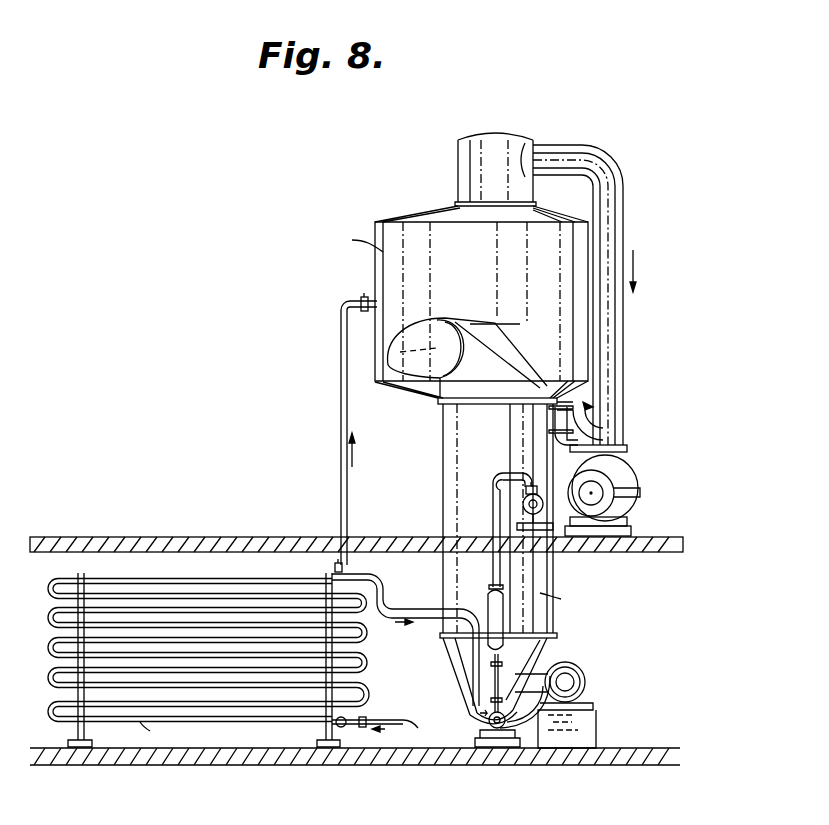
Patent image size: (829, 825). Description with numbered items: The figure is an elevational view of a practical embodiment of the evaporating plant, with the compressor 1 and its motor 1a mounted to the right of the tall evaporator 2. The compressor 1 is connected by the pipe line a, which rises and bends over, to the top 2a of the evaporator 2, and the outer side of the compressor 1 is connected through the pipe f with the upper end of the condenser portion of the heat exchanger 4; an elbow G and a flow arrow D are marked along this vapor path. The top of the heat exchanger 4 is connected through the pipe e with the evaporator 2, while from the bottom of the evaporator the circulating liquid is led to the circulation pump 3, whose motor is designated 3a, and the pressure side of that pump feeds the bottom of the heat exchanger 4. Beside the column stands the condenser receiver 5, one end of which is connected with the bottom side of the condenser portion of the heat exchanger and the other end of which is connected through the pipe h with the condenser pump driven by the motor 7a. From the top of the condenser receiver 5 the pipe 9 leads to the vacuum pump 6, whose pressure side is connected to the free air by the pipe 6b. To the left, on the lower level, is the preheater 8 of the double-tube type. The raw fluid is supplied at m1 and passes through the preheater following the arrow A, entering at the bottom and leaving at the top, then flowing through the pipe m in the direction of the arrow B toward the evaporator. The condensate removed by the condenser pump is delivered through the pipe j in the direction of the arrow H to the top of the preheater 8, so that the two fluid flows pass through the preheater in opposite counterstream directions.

The compressor 1 is at (628, 480).
The compressor motor 1a is at (620, 503).
The evaporator 2 is at (388, 272).
The top of the evaporator 2a is at (460, 160).
The circulation pump 3 is at (520, 715).
The circulation pump motor 3a is at (582, 676).
The heat exchanger 4 is at (455, 463).
The condenser receiver 5 is at (503, 602).
The vacuum pump 6 is at (527, 490).
The vacuum pump discharge pipe 6b is at (527, 508).
The condenser pump motor 7a is at (486, 725).
The preheater 8 is at (163, 577).
The vacuum pipe 9 is at (492, 519).
The pipe line a is at (620, 228).
The pipe e is at (420, 362).
The pipe f is at (596, 432).
The elbow G is at (612, 416).
The pipe h is at (496, 685).
The pipe j is at (394, 606).
The pipe m is at (340, 406).
The raw fluid supply m1 is at (386, 730).
The arrow A is at (384, 730).
The arrow B is at (354, 456).
The flow direction arrow D is at (636, 266).
The arrow H is at (420, 627).